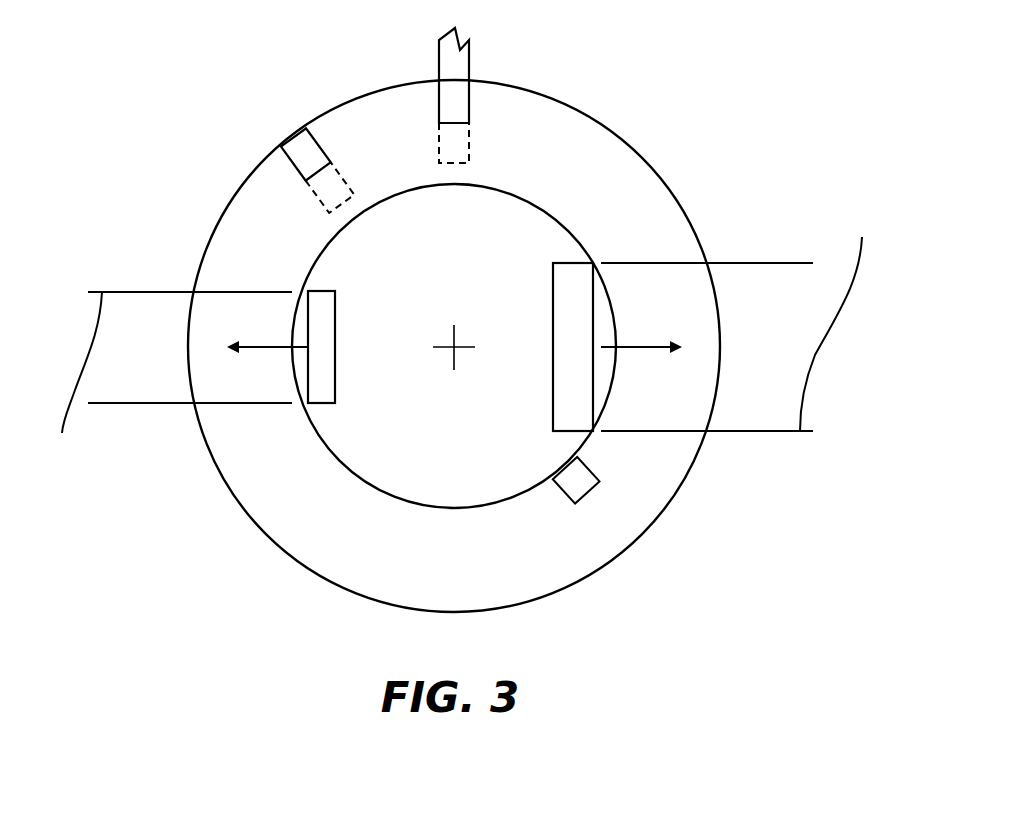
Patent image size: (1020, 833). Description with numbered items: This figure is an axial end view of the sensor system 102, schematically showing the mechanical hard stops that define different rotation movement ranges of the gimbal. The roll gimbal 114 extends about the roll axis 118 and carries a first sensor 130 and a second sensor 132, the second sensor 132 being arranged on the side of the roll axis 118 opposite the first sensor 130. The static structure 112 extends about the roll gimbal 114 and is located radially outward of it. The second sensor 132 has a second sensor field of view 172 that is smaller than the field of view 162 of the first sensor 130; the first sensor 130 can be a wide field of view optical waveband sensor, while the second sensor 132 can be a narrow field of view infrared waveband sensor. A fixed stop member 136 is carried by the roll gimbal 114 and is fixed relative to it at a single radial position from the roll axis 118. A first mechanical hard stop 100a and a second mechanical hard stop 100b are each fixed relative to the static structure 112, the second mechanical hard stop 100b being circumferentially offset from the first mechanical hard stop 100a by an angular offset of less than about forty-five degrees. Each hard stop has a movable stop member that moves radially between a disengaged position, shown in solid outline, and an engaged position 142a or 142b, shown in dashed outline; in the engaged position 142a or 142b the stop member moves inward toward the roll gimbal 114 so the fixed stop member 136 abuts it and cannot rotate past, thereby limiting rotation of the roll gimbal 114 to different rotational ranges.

The sensor system 102 is at (256, 602).
The static structure 112 is at (722, 372).
The roll gimbal 114 is at (495, 507).
The roll axis 118 is at (472, 350).
The first sensor 130 is at (573, 290).
The second sensor 132 is at (322, 387).
The fixed stop member 136 is at (578, 487).
The field of view of first sensor 162 is at (793, 263).
The second sensor field of view 172 is at (105, 403).
The first mechanical hard stop 100a is at (452, 105).
The second mechanical hard stop 100b is at (305, 153).
The engaged position 142a is at (470, 140).
The engaged position 142b is at (338, 173).